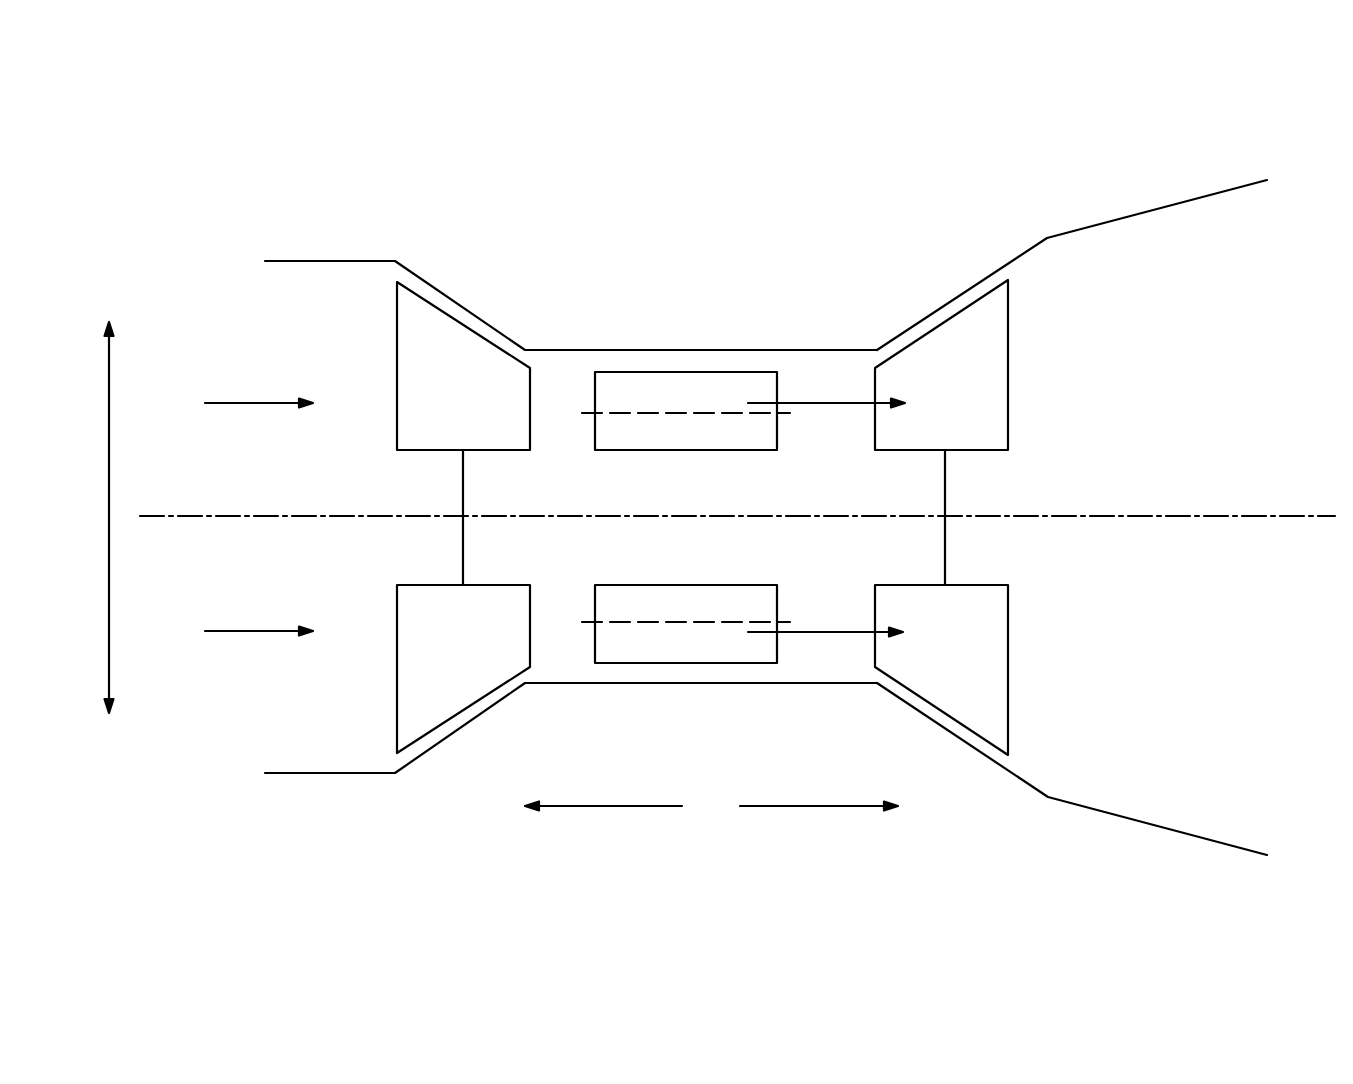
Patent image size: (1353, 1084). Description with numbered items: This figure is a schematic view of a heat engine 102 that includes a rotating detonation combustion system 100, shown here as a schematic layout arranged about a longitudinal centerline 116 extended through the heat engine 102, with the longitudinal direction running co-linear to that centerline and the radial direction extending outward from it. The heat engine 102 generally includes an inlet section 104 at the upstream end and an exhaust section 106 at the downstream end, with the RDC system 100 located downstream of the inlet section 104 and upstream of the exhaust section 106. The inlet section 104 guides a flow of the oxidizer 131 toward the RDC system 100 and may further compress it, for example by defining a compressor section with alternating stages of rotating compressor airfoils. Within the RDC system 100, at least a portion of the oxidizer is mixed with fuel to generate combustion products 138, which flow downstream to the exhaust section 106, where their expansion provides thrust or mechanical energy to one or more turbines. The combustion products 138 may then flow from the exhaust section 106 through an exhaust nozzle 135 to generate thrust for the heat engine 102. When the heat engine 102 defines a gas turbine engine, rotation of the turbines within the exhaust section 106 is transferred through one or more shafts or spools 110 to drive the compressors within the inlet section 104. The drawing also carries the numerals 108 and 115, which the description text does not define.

The rotating detonation combustion system 100 is at (680, 372).
The heat engine 102 is at (664, 499).
The inlet section 104 is at (450, 346).
The exhaust section 106 is at (975, 371).
The inlet section 108 is at (355, 298).
The shafts or spools 110 is at (565, 517).
The combustor 115 is at (663, 622).
The longitudinal centerline 116 is at (1118, 515).
The flow of the oxidizer 131 is at (247, 403).
The exhaust nozzle 135 is at (1166, 152).
The combustion products 138 is at (823, 632).